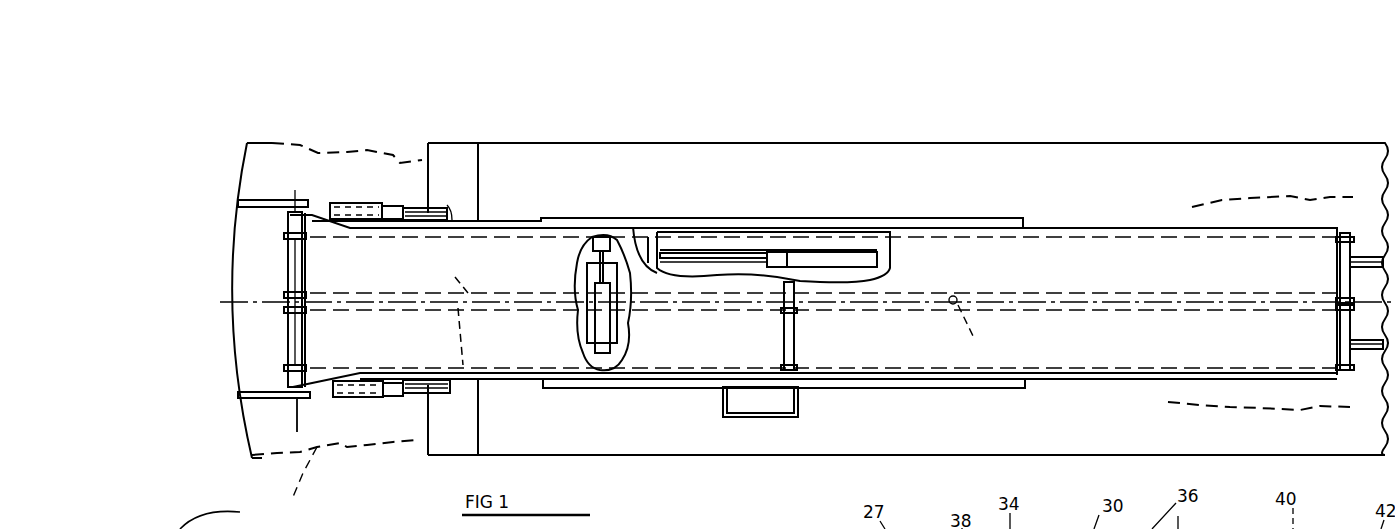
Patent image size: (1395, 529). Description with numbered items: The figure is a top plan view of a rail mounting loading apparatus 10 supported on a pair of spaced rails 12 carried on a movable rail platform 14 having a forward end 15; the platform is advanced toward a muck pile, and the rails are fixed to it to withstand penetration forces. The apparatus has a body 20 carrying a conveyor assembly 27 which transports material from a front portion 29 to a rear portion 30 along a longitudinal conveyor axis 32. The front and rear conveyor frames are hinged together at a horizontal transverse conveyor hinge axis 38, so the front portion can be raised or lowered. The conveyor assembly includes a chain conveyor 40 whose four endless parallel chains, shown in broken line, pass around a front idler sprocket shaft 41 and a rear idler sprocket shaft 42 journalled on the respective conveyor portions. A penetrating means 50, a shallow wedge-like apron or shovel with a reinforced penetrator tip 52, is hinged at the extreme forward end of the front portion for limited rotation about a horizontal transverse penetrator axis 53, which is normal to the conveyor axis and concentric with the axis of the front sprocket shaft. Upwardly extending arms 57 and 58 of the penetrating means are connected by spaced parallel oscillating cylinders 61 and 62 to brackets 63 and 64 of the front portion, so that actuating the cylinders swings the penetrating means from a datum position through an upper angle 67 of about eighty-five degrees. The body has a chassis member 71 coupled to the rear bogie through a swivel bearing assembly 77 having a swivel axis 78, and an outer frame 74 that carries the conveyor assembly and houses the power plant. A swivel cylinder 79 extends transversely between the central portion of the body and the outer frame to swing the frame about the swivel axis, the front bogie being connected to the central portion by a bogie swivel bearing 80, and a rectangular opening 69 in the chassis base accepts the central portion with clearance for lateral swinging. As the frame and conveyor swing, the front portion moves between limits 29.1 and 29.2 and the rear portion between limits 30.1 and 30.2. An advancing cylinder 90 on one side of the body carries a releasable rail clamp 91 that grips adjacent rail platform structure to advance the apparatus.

The rail mounting loading apparatus 10 is at (925, 404).
The rails 12 is at (1361, 255).
The rail platform 14 is at (685, 440).
The forward end 15 is at (427, 440).
The body 20 is at (1025, 387).
The conveyor assembly 27 is at (1099, 256).
The front portion 29 is at (524, 372).
The limit 29.1 is at (272, 142).
The limit 29.2 is at (332, 474).
The rear portion 30 is at (1100, 353).
The limit 30.1 is at (1203, 405).
The limit 30.2 is at (1222, 200).
The longitudinal conveyor axis 32 is at (1135, 300).
The conveyor hinge axis 38 is at (798, 352).
The chain conveyor 40 is at (460, 345).
The idler sprocket shaft 41 is at (298, 345).
The idler sprocket shaft 42 is at (1342, 330).
The penetrating means 50 is at (255, 361).
The penetrator tip 52 is at (228, 295).
The penetrator axis 53 is at (298, 410).
The arm 57 is at (250, 398).
The arm 58 is at (255, 200).
The oscillating cylinder 61 is at (393, 390).
The oscillating cylinder 62 is at (391, 205).
The bracket 63 is at (434, 393).
The bracket 64 is at (448, 212).
The upper angle 67 is at (218, 519).
The rectangular opening 69 is at (587, 270).
The chassis member 71 is at (618, 250).
The outer frame 74 is at (590, 237).
The swivel bearing assembly 77 is at (979, 326).
The swivel axis 78 is at (615, 312).
The swivel cylinder 79 is at (603, 350).
The bogie swivel bearing 80 is at (580, 319).
The advancing cylinder 90 is at (817, 260).
The rail clamp 91 is at (690, 258).